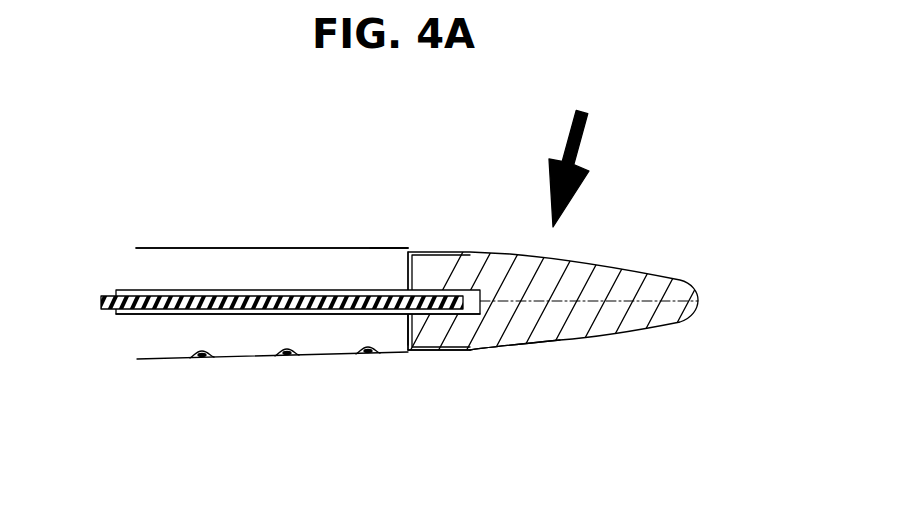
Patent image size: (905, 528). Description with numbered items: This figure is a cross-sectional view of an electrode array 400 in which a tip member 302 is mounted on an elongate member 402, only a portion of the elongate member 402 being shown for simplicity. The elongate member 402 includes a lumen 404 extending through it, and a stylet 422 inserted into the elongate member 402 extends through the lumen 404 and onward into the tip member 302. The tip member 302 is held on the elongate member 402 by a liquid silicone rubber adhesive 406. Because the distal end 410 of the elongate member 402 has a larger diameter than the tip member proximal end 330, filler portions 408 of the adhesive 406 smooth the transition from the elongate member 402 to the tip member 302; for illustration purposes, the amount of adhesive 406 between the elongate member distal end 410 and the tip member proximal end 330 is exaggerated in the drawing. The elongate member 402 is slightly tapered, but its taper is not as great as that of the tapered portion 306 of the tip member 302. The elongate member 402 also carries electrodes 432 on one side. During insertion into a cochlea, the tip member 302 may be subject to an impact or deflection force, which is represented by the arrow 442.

The electrode array 400 is at (170, 190).
The elongate member 402 is at (218, 248).
The lumen 404 is at (288, 289).
The tip member proximal end 330 is at (405, 272).
The filler portions 408 is at (423, 249).
The liquid silicone rubber adhesive 406 is at (416, 353).
The distal end of elongate member 410 is at (412, 321).
The stylet 422 is at (233, 315).
The electrodes 432 is at (362, 356).
The tip member 302 is at (627, 310).
The tapered portion 306 is at (558, 340).
The arrow 442 is at (578, 155).